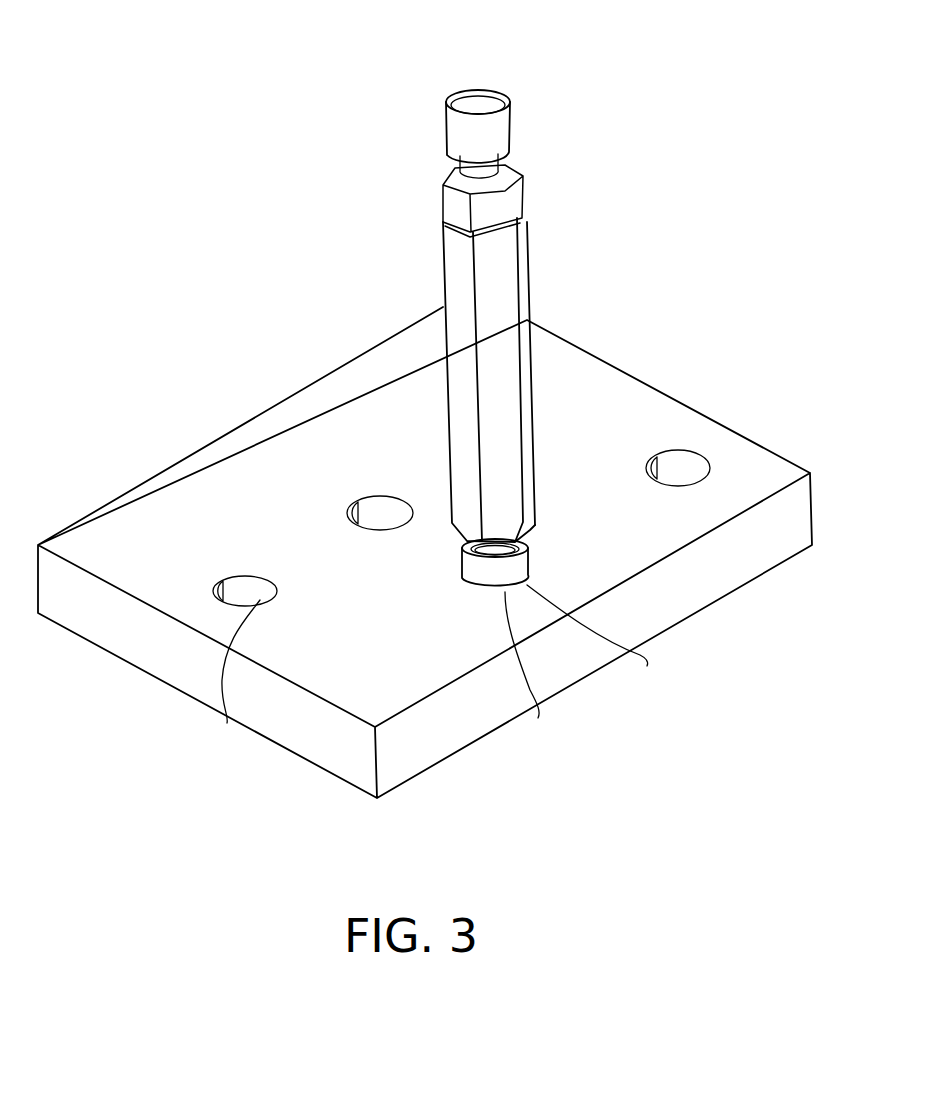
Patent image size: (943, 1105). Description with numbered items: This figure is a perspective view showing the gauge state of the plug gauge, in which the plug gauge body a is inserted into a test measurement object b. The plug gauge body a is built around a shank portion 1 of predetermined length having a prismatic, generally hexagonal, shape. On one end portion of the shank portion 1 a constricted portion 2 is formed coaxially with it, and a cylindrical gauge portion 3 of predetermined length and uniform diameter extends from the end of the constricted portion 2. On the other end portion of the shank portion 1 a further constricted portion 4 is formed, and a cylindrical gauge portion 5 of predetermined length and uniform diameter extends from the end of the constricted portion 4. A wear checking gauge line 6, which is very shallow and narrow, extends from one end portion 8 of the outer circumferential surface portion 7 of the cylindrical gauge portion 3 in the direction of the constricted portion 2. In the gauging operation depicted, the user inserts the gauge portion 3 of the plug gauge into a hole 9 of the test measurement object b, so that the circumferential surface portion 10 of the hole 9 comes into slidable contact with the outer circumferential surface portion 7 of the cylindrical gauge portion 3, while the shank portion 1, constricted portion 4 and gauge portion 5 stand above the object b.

The shank portion 1 is at (493, 311).
The constricted portion 2 is at (496, 549).
The cylindrical gauge portion 3 is at (532, 674).
The constricted portion 4 is at (497, 172).
The cylindrical gauge portion 5 is at (470, 102).
The wear checking gauge line 6 is at (470, 590).
The outer circumferential surface portion 7 is at (593, 642).
The end portion 8 is at (483, 201).
The hole 9 is at (235, 590).
The circumferential surface portion 10 is at (586, 690).
The plug gauge body a is at (527, 277).
The test measurement object b is at (333, 405).